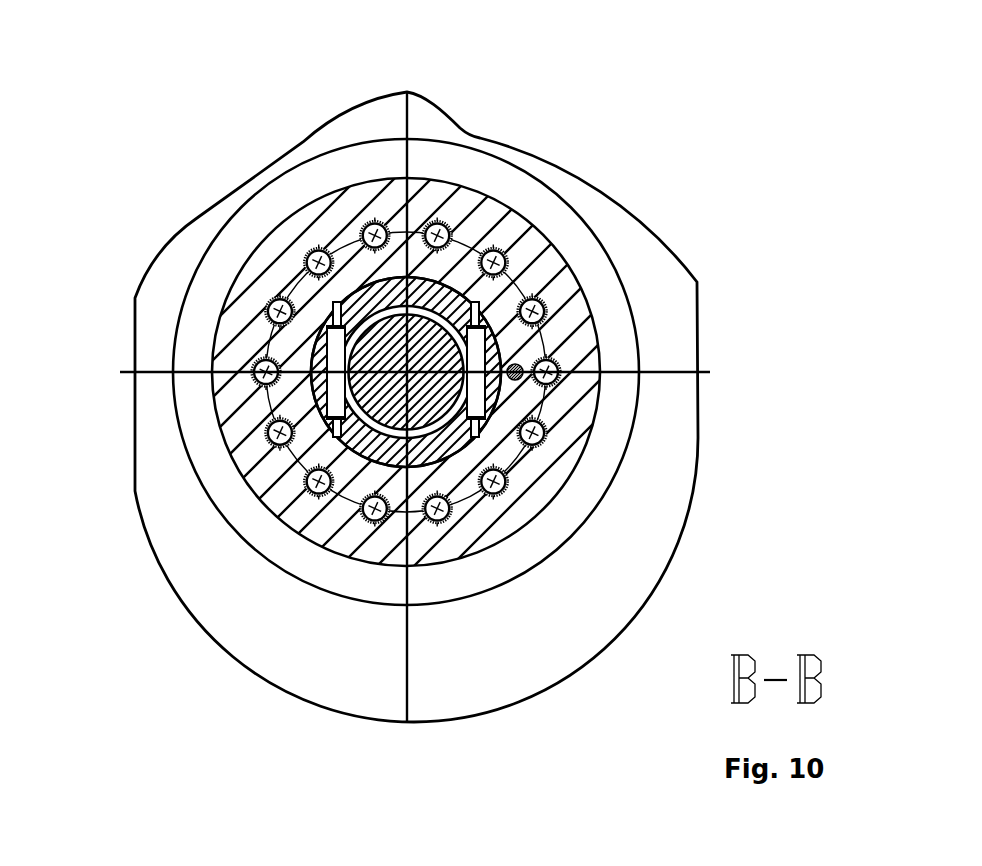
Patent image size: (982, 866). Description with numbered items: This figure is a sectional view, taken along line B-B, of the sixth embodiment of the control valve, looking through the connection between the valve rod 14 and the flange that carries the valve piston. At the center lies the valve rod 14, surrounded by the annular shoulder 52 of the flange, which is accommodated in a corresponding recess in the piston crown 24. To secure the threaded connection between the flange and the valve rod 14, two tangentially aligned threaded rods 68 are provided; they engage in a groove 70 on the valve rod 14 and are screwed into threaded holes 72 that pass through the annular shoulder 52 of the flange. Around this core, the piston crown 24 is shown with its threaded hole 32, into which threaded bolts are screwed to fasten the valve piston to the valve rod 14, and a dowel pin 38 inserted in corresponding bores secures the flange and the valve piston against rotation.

The valve rod 14 is at (425, 335).
The piston crown 24 is at (632, 537).
The threaded hole 32 is at (270, 298).
The dowel pin 38 is at (523, 379).
The annular shoulder 52 is at (381, 292).
The threaded rods 68 is at (327, 366).
The groove 70 is at (435, 432).
The threaded holes 72 is at (290, 450).